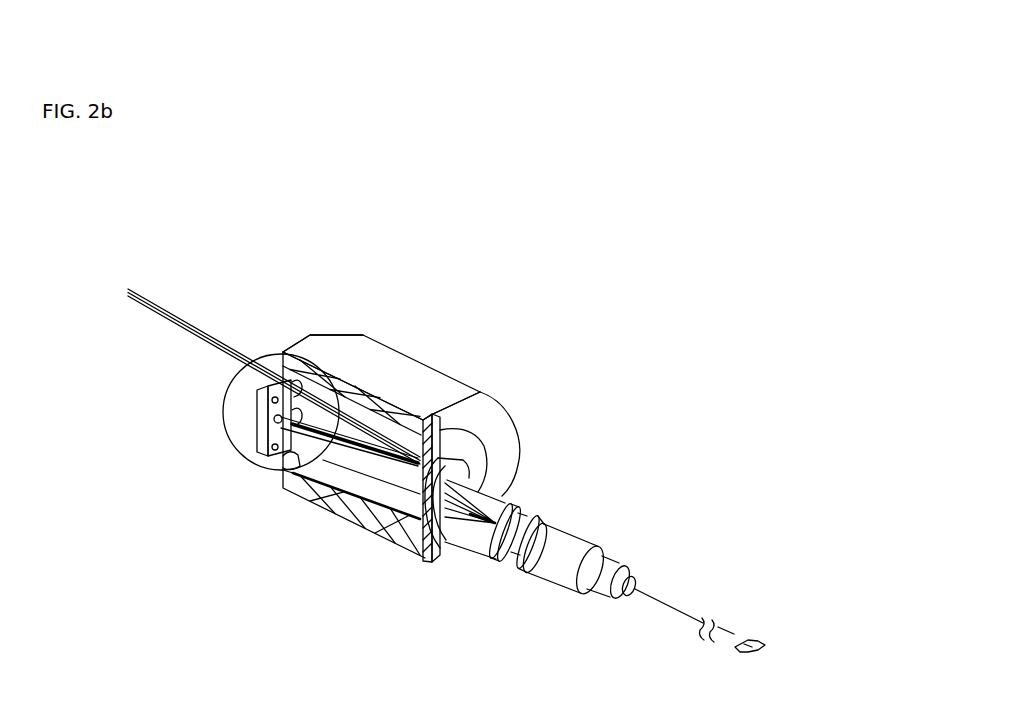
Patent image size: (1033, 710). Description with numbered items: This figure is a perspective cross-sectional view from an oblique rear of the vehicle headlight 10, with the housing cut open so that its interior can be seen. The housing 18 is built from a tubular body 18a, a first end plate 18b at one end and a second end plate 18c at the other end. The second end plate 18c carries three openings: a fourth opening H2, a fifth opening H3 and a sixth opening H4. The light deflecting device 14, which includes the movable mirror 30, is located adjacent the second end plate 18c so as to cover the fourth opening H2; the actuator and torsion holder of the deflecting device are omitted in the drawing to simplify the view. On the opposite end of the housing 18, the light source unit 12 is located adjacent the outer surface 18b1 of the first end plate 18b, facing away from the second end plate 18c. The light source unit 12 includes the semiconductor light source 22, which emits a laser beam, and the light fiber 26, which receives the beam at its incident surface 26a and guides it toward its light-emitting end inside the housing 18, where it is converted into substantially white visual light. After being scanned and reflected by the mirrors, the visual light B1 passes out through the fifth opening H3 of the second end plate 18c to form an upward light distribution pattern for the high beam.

The vehicle headlight 10 is at (380, 250).
The light source unit 12 is at (564, 500).
The light deflecting device 14 is at (250, 414).
The housing 18 is at (463, 360).
The body 18a is at (410, 368).
The first end plate 18b is at (490, 423).
The outer surface 18b1 is at (487, 412).
The second end plate 18c is at (270, 368).
The semiconductor light source 22 is at (760, 637).
The light fiber 26 is at (675, 606).
The incident surface 26a is at (733, 632).
The movable mirror 30 is at (260, 440).
The visual light B1 is at (170, 314).
The fourth opening H2 is at (348, 398).
The fifth opening H3 is at (330, 392).
The sixth opening H4 is at (289, 463).